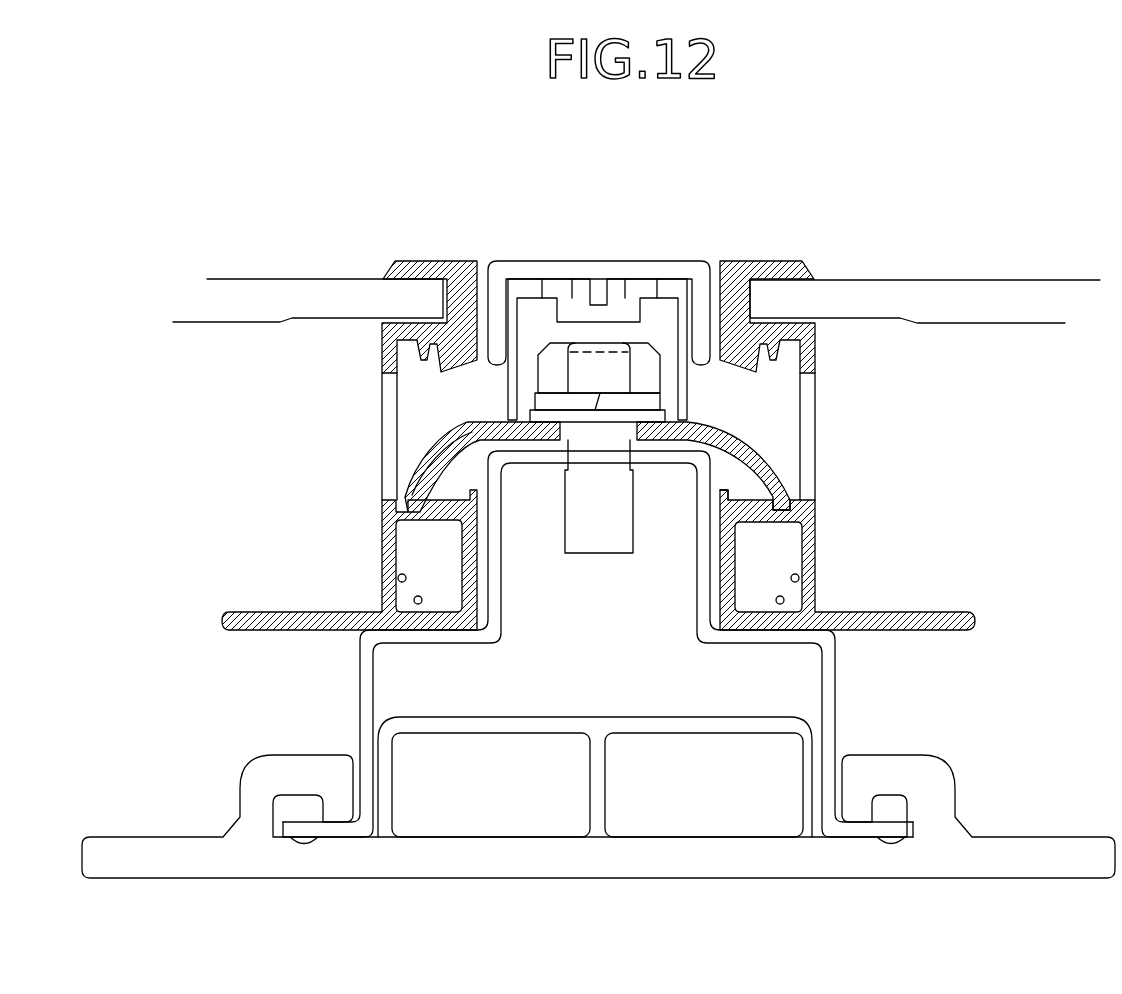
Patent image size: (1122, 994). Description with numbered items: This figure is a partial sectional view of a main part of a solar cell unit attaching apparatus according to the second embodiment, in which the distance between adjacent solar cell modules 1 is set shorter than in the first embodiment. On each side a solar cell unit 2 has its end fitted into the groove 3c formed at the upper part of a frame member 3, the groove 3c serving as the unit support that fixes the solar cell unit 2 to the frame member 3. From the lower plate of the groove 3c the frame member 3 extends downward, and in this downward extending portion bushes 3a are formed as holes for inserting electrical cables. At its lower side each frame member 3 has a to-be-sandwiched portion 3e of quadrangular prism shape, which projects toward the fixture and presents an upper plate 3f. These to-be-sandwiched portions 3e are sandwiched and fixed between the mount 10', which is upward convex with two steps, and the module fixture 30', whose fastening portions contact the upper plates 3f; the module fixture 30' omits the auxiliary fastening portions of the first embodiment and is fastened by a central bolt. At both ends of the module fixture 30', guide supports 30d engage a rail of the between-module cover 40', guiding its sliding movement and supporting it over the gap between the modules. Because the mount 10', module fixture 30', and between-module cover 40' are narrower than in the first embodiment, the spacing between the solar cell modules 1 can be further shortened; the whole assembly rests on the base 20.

The solar cell module 1 is at (900, 260).
The solar cell unit 2 is at (312, 290).
The frame member 3 is at (816, 361).
The bush 3a is at (812, 376).
The groove 3c is at (762, 262).
The to-be-sandwiched portion 3e is at (817, 563).
The upper plate 3f is at (750, 502).
The mount 10' is at (598, 644).
The base rail 20 is at (827, 873).
The module fixture 30' is at (537, 450).
The guide support 30d is at (674, 320).
The between-module cover 40' is at (599, 374).